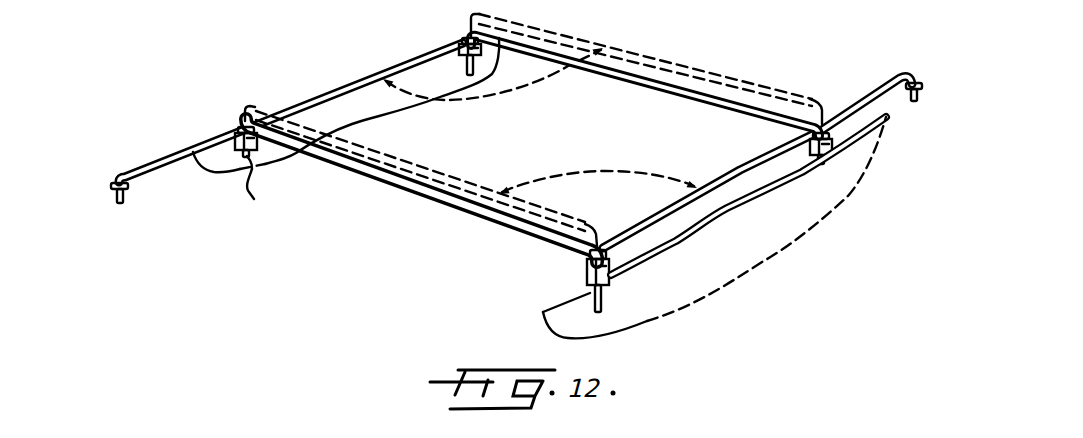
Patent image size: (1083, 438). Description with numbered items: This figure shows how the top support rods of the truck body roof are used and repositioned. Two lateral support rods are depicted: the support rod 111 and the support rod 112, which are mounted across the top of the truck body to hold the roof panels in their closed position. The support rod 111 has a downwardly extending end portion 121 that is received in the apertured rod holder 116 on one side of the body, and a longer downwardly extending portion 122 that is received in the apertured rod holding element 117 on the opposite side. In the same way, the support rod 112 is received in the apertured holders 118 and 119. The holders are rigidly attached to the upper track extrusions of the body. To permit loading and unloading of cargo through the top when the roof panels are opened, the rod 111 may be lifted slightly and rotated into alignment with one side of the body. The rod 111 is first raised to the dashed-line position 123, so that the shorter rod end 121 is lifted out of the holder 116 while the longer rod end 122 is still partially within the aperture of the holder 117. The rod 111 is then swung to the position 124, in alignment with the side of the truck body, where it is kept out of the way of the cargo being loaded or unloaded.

The support rod 111 is at (441, 201).
The support rod 112 is at (677, 93).
The apertured rod holder 116 is at (233, 143).
The apertured rod holding element 117 is at (546, 272).
The apertured holder 118 is at (458, 41).
The apertured holder 119 is at (834, 158).
The downwardly extending end portion 121 is at (346, 128).
The downwardly extending portion 122 is at (607, 289).
The raised dashed line position 123 is at (453, 165).
The rotated position 124 is at (738, 159).